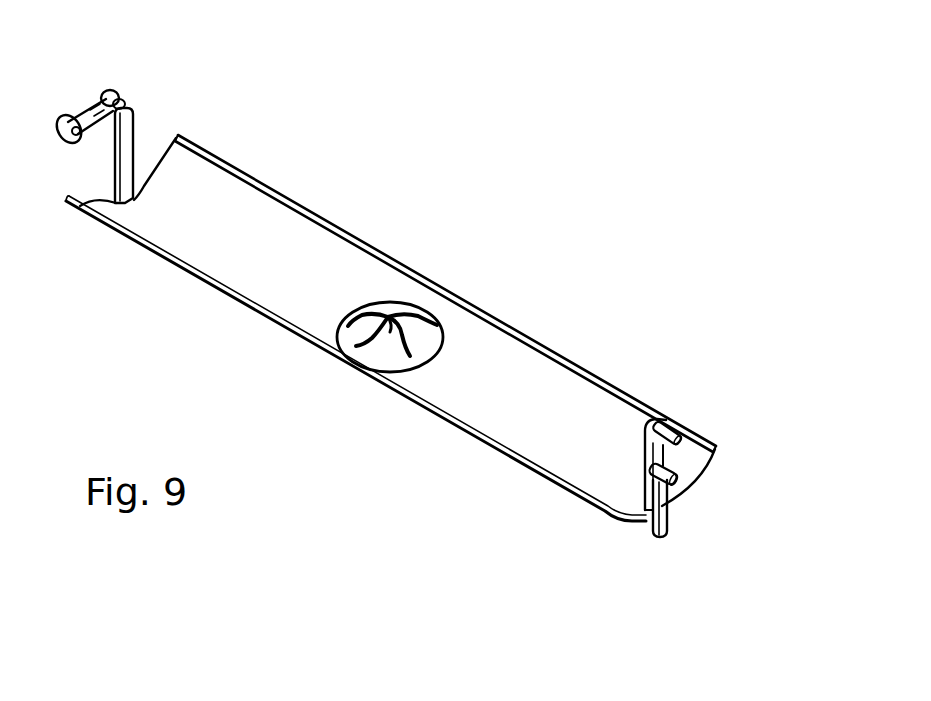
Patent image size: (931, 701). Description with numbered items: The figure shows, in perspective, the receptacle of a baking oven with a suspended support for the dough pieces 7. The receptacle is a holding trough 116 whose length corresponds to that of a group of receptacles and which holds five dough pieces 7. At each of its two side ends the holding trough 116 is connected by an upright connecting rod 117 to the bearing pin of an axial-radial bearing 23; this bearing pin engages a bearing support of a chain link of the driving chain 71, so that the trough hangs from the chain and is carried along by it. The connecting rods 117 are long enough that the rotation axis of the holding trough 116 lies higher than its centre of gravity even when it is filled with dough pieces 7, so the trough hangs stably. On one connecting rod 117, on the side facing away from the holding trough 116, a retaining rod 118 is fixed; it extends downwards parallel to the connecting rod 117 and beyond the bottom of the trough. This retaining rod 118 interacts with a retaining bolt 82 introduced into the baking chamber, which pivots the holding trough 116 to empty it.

The dough pieces 7 is at (397, 307).
The axial-radial bearing 23 is at (673, 427).
The driving chain 71 is at (107, 97).
The retaining bolt 82 is at (702, 482).
The holding trough 116 is at (515, 330).
The connecting rods 117 is at (128, 135).
The retaining rod 118 is at (667, 525).